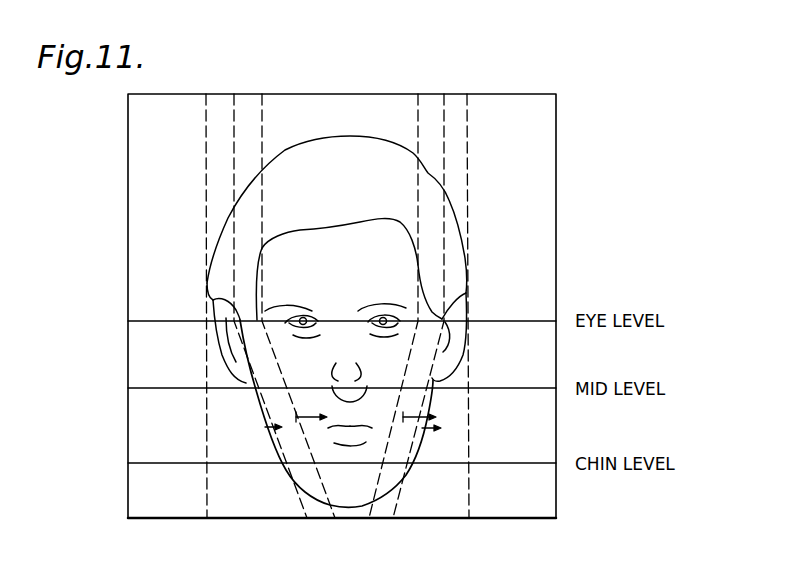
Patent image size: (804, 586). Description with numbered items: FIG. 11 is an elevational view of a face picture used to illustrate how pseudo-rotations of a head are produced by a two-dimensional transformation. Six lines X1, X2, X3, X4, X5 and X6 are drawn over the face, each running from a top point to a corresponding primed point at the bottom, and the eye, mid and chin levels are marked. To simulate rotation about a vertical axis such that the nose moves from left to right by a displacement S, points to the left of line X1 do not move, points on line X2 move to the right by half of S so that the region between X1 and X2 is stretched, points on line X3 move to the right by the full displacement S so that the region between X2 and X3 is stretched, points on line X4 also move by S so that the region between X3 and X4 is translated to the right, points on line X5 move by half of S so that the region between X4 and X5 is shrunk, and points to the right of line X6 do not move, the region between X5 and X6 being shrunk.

The line X1-X1' X1 is at (208, 309).
The line X2-X2' X2 is at (272, 309).
The line X3-X3' X3 is at (301, 309).
The line X4-X4' X4 is at (392, 309).
The line X5-X5' X5 is at (421, 309).
The line X6-X6' X6 is at (471, 309).
The displacement S is at (297, 416).